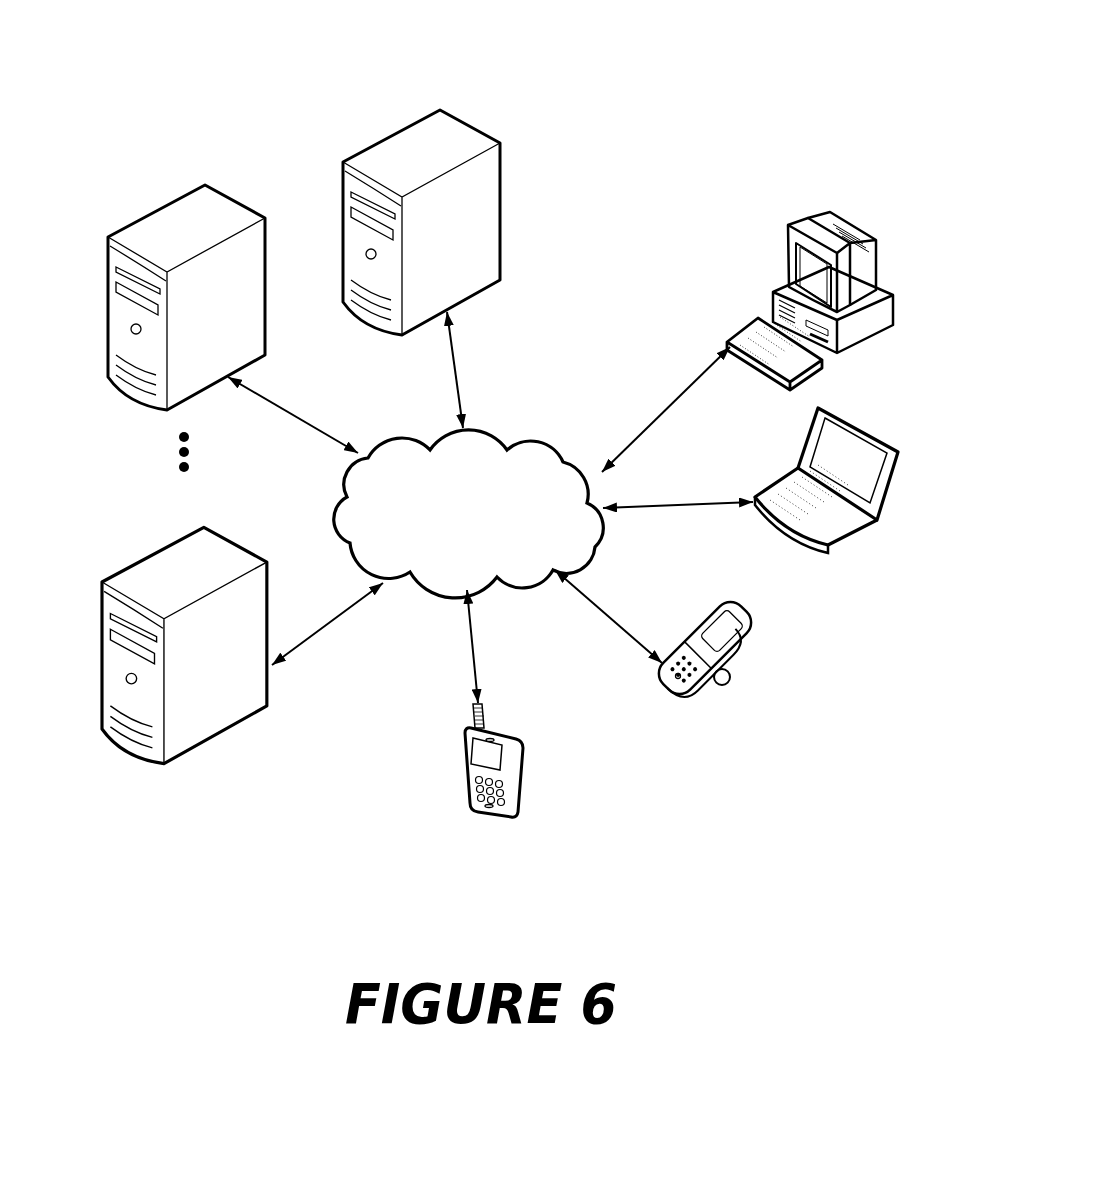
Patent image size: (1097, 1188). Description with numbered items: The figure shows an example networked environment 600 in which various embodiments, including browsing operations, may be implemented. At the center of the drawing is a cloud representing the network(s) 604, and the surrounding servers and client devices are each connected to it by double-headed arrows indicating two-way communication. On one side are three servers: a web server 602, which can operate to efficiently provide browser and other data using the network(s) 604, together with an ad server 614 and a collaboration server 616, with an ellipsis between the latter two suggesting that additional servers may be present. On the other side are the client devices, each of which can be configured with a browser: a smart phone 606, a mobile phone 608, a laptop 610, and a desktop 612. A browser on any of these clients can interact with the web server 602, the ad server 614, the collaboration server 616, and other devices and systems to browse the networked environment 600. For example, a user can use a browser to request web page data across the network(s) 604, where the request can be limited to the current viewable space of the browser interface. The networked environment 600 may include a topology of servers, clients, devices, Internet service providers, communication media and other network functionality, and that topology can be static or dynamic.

The networked environment 600 is at (705, 90).
The web server 602 is at (403, 135).
The network(s) 604 is at (335, 507).
The smart phone 606 is at (527, 763).
The mobile phone 608 is at (755, 633).
The laptop 610 is at (872, 433).
The desktop 612 is at (765, 293).
The ad server 614 is at (150, 210).
The collaboration server 616 is at (152, 563).